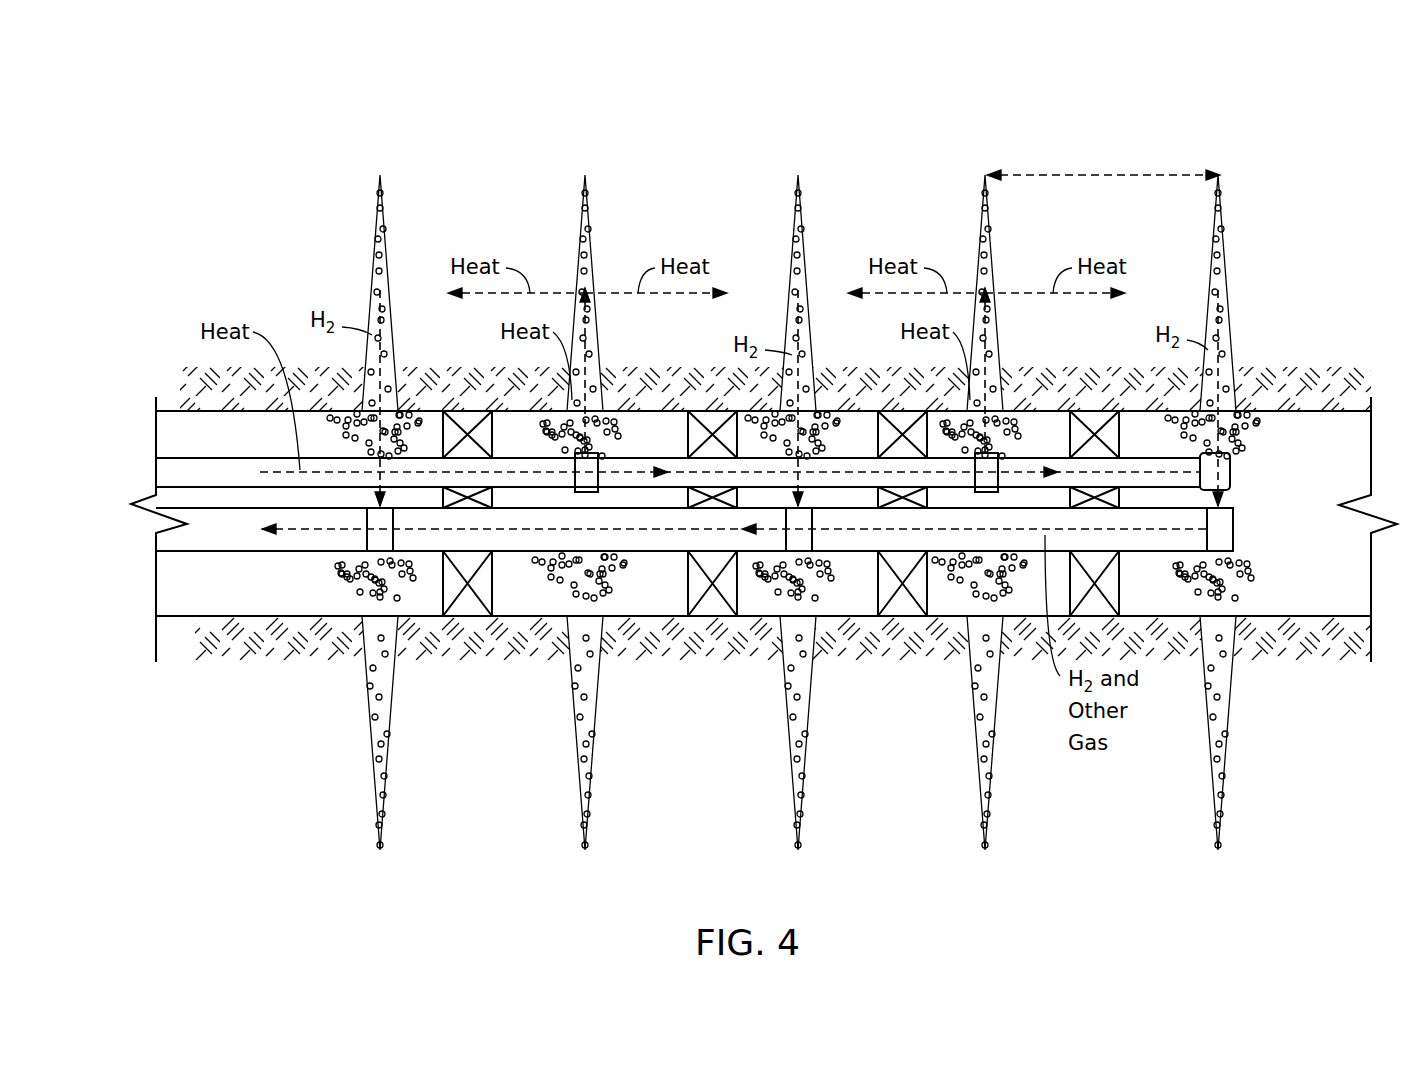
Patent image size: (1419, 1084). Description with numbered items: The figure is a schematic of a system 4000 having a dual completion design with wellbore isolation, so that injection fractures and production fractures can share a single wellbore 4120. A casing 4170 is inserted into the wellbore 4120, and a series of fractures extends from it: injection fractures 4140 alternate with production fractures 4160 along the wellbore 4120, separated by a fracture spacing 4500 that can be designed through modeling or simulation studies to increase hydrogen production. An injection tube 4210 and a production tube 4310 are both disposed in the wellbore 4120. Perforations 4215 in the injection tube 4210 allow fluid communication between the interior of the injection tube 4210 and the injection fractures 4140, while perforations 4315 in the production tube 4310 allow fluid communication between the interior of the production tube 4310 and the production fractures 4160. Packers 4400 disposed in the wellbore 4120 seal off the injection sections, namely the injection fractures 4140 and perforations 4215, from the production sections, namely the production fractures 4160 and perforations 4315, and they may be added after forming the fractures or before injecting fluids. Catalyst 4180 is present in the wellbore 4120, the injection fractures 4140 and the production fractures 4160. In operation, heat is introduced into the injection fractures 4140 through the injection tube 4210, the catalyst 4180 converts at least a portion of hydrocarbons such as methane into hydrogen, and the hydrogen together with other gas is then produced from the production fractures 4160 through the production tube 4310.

The system 4000 is at (1310, 113).
The fracture spacing 4500 is at (1115, 175).
The production fractures 4160 is at (372, 222).
The injection fractures 4140 is at (577, 222).
The injection tube 4210 is at (181, 458).
The perforations 4215 is at (980, 590).
The production tube 4310 is at (197, 553).
The perforations 4315 is at (383, 552).
The wellbore 4120 is at (257, 582).
The packers 4400 is at (445, 605).
The catalyst 4180 is at (1268, 558).
The casing 4170 is at (1278, 645).